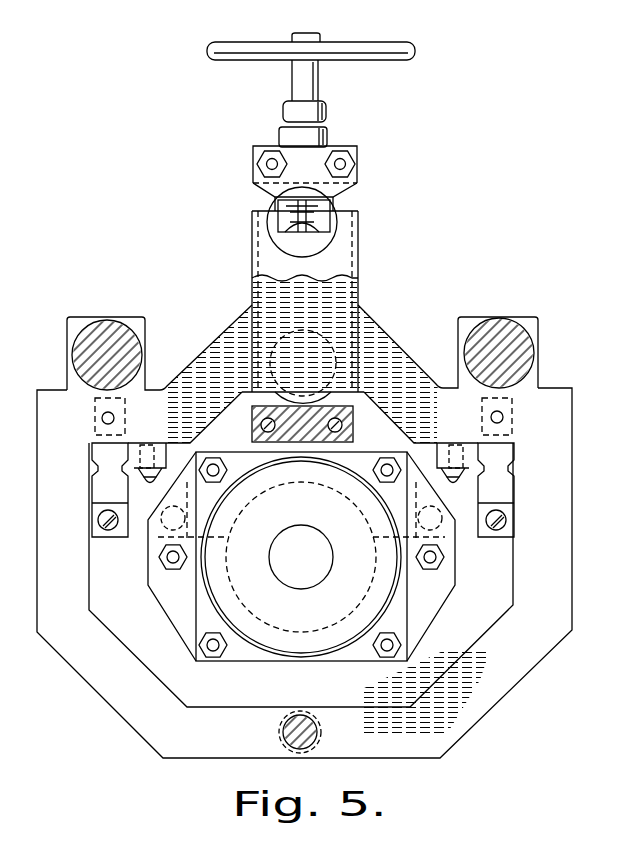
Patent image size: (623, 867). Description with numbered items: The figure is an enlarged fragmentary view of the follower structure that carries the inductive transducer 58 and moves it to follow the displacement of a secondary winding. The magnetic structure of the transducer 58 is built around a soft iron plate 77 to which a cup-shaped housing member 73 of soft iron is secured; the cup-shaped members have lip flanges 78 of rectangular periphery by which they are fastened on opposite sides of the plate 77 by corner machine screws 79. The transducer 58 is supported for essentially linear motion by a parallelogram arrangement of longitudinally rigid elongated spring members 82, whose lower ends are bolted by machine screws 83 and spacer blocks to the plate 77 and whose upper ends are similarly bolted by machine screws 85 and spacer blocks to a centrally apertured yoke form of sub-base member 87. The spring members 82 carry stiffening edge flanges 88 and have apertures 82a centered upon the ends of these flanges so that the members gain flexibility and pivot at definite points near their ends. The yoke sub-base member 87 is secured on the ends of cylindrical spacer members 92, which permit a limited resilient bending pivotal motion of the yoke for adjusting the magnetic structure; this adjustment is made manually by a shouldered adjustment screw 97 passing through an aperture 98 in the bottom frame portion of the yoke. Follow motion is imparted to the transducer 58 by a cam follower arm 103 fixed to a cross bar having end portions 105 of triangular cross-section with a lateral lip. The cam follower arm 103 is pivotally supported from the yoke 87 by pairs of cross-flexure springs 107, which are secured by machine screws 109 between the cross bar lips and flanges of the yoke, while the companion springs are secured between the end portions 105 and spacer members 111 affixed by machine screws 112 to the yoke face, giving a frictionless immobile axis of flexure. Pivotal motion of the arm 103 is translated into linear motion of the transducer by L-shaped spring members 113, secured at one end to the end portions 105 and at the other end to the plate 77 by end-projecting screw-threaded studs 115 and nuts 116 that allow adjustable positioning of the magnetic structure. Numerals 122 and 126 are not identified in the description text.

The inductive transducer 58 is at (301, 640).
The cup-shaped housing member 73 is at (345, 634).
The soft iron plate 77 is at (175, 612).
The lip flanges 78 is at (236, 668).
The corner machine screws 79 is at (380, 470).
The spring members 82 is at (340, 260).
The apertures 82a is at (323, 236).
The machine screws 83 is at (262, 421).
The machine screws 85 is at (265, 164).
The yoke sub-base member 87 is at (372, 342).
The stiffening edge flanges 88 is at (251, 290).
The cylindrical spacer members 92 is at (92, 352).
The shouldered adjustment screw 97 is at (299, 749).
The aperture 98 is at (320, 743).
The cam follower arm 103 is at (284, 113).
The end portions 105 is at (92, 503).
The cross-flexure springs 107 is at (94, 457).
The machine screws 109 is at (110, 531).
The spacer members 111 is at (96, 404).
The machine screws 112 is at (104, 419).
The spring members 113 is at (226, 534).
The screw-threaded studs 115 is at (165, 560).
The nuts 116 is at (165, 572).
The valve stem 122 is at (292, 80).
The handle bar 126 is at (366, 58).